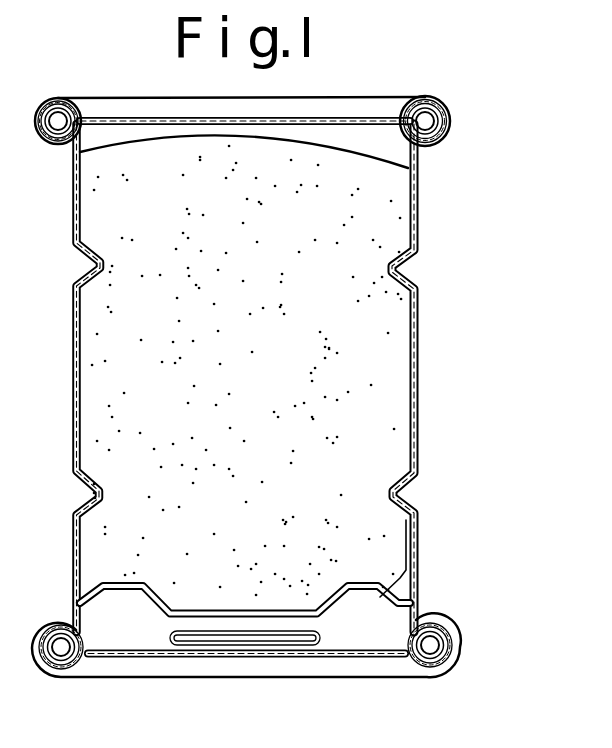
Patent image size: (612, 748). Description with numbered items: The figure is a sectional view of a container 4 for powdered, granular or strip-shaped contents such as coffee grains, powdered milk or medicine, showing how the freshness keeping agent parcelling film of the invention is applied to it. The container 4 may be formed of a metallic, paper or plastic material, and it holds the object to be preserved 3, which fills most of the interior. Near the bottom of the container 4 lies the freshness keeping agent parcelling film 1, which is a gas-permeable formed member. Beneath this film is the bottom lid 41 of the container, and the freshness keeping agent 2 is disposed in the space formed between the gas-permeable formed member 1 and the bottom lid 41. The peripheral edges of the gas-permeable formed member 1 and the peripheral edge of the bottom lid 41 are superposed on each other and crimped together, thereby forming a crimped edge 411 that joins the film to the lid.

The freshness keeping agent parcelling film 1 is at (404, 574).
The freshness keeping agent 2 is at (318, 640).
The object to be preserved 3 is at (380, 205).
The container 4 is at (418, 294).
The bottom lid 41 is at (367, 662).
The crimped edge 411 is at (520, 618).